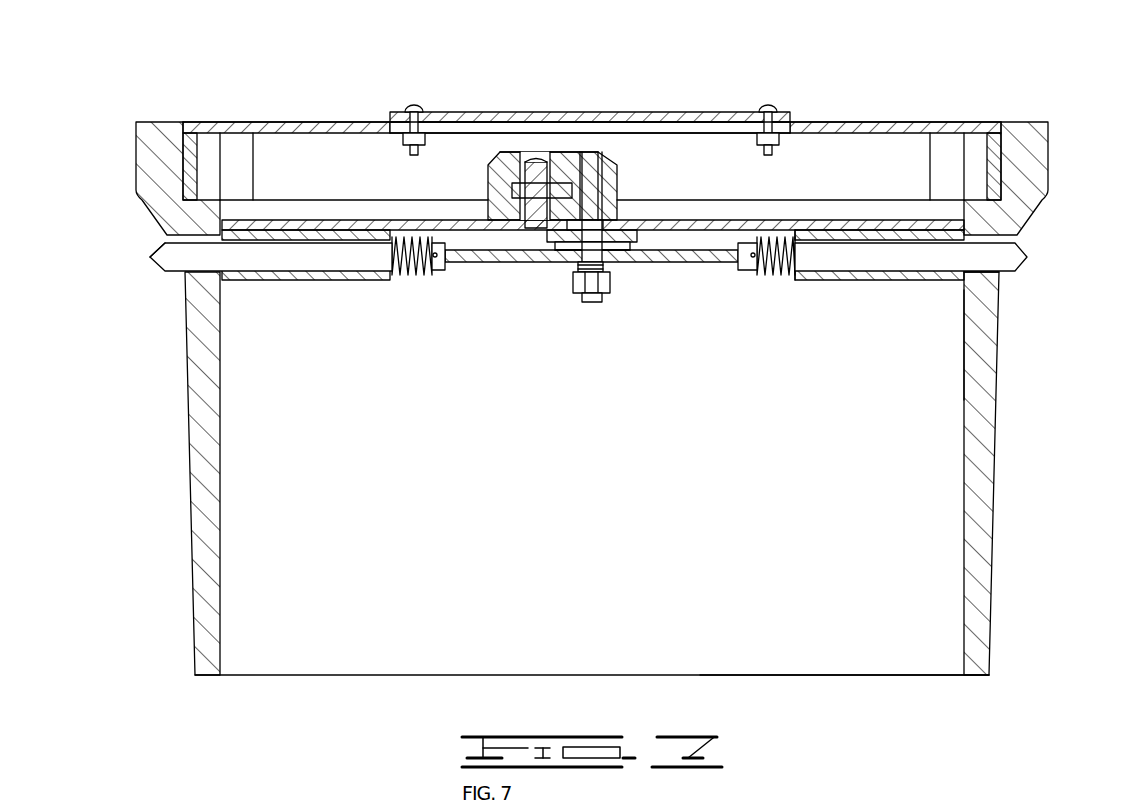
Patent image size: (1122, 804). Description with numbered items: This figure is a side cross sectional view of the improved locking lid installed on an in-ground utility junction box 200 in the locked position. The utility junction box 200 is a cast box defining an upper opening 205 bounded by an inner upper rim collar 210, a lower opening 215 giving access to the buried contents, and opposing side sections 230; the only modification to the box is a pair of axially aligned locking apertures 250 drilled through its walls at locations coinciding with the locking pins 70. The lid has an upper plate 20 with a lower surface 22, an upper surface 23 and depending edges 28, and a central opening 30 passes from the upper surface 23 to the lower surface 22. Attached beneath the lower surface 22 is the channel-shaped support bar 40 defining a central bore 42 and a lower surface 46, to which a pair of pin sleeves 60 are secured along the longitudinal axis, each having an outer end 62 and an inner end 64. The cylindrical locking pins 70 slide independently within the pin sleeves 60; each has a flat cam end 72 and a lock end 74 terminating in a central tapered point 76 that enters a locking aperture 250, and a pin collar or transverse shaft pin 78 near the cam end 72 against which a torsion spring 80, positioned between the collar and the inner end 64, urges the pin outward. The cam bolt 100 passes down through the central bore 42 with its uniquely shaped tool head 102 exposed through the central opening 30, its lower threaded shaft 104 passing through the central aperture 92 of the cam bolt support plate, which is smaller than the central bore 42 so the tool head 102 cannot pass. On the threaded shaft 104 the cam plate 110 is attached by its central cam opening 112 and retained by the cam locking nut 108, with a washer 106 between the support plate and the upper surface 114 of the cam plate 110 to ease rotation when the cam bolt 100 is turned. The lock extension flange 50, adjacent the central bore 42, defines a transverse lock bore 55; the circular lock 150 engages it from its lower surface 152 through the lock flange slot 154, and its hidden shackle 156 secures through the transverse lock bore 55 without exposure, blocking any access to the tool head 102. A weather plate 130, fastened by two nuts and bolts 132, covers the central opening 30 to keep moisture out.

The upper plate 20 is at (950, 128).
The lower surface 22 is at (846, 146).
The upper surface 23 is at (232, 120).
The edges 28 is at (186, 160).
The central opening 30 is at (452, 128).
The support bar 40 is at (328, 226).
The central bore 42 is at (580, 192).
The lower surface 46 is at (700, 262).
The lock extension flange 50 is at (447, 268).
The transverse lock bore 55 is at (518, 158).
The pin sleeves 60 is at (880, 282).
The outer end 62 is at (998, 342).
The inner end 64 is at (800, 282).
The locking pins 70 is at (1028, 258).
The cam end 72 is at (440, 283).
The lock end 74 is at (183, 255).
The central tapered point 76 is at (160, 250).
The pin collar or transverse shaft pin 78 is at (431, 275).
The torsion spring 80 is at (400, 282).
The central aperture 92 is at (632, 230).
The cam bolt 100 is at (600, 256).
The tool head 102 is at (600, 195).
The lower threaded shaft 104 is at (593, 303).
The washer 106 is at (565, 262).
The cam locking nut 108 is at (608, 290).
The cam plate 110 is at (745, 272).
The central cam opening 112 is at (577, 268).
The upper surface 114 is at (660, 250).
The weather plate 130 is at (722, 114).
The nuts and bolts 132 is at (780, 108).
The circular lock 150 is at (490, 180).
The lower surface 152 is at (510, 160).
The lock flange slot 154 is at (537, 160).
The hidden shackle 156 is at (560, 105).
The utility junction box 200 is at (255, 685).
The upper opening 205 is at (1030, 122).
The inner upper rim collar 210 is at (1020, 230).
The lower opening 215 is at (940, 677).
The opposing side sections 230 is at (997, 497).
The locking apertures 250 is at (998, 300).